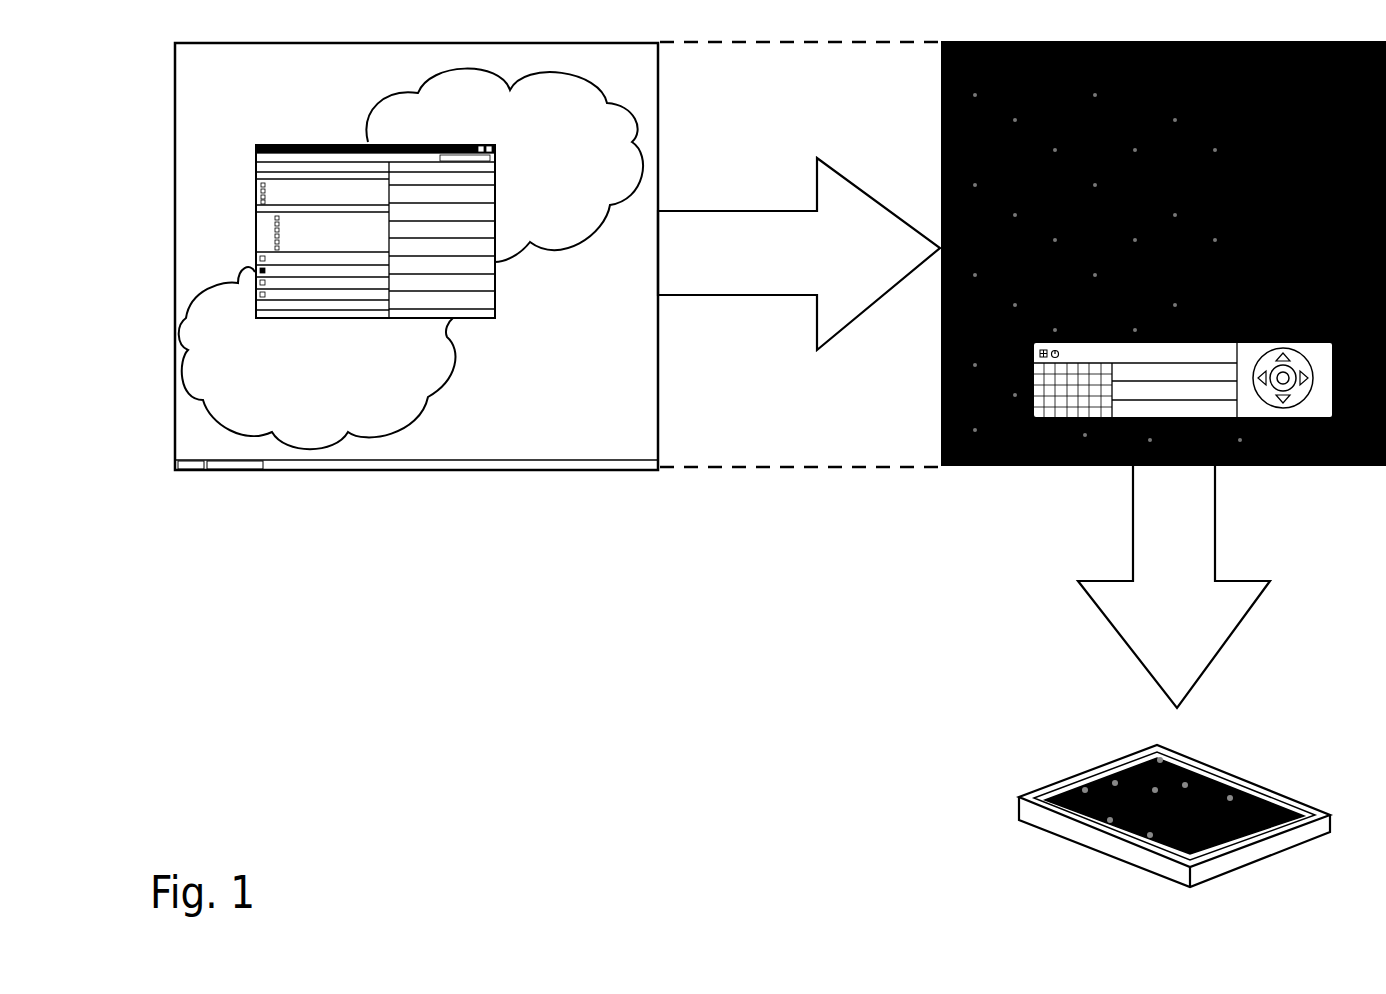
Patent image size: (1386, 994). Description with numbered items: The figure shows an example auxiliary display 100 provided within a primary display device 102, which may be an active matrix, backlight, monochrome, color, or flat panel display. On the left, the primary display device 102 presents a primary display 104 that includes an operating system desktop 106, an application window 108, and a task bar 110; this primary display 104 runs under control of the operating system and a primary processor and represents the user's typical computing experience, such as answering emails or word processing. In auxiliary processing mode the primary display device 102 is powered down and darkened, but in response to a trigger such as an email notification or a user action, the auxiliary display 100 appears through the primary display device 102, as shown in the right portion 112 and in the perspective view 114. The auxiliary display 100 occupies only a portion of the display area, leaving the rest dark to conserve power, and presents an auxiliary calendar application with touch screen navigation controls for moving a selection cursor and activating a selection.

The auxiliary display 100 is at (1265, 418).
The primary display device 102 is at (175, 422).
The primary display 104 is at (375, 326).
The operating system desktop 106 is at (233, 73).
The application window 108 is at (255, 203).
The task bar 110 is at (520, 462).
The right portion 112 is at (982, 495).
The perspective view 114 is at (1010, 735).